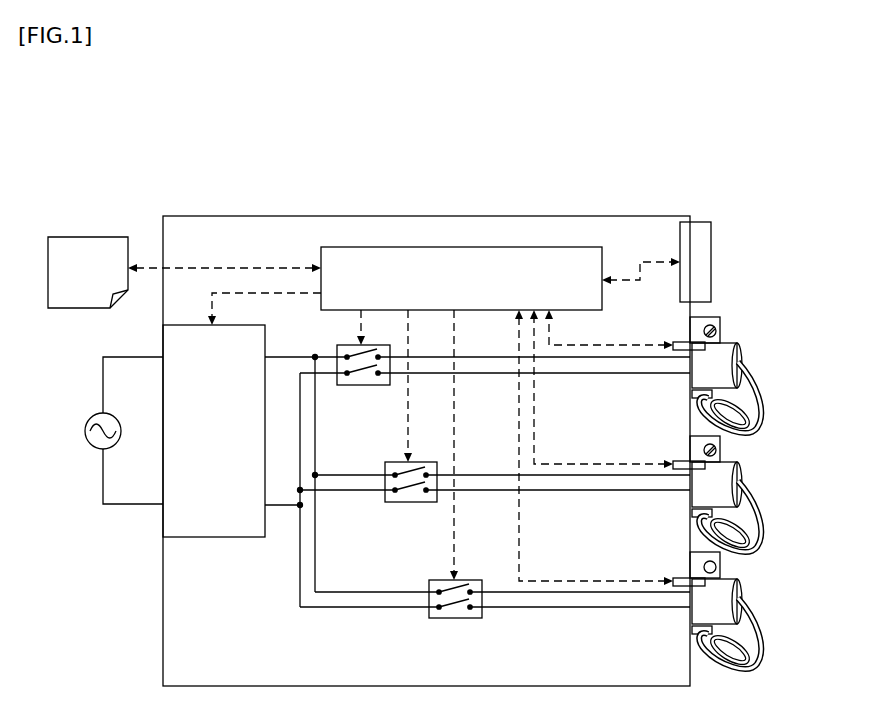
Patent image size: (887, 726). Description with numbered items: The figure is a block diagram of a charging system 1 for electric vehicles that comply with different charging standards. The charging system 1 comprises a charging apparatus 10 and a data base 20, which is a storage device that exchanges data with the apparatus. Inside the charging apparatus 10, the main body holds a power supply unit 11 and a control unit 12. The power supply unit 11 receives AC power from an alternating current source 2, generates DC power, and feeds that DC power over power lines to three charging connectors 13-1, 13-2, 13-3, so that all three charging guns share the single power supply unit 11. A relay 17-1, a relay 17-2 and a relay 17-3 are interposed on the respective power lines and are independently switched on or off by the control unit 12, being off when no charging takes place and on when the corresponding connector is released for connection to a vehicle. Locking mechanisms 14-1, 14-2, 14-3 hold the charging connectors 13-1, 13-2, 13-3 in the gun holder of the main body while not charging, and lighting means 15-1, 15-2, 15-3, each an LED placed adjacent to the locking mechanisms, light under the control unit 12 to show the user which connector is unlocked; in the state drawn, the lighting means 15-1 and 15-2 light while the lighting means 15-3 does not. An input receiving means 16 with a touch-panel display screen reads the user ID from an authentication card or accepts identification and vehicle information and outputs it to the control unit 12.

The charging system 1 is at (460, 110).
The alternating current source 2 is at (85, 432).
The charging apparatus 10 is at (418, 216).
The power supply unit 11 is at (218, 540).
The control unit 12 is at (562, 247).
The charging connector 13-1 is at (743, 355).
The charging connector 13-2 is at (767, 507).
The charging connector 13-3 is at (767, 624).
The locking mechanism 14-1 is at (685, 342).
The locking mechanism 14-2 is at (685, 461).
The locking mechanism 14-3 is at (685, 578).
The lighting means 15-1 is at (720, 331).
The lighting means 15-2 is at (720, 450).
The lighting means 15-3 is at (720, 567).
The input receiving means 16 is at (705, 222).
The relay 17-1 is at (363, 387).
The relay 17-2 is at (408, 503).
The relay 17-3 is at (455, 620).
The data base 20 is at (92, 237).